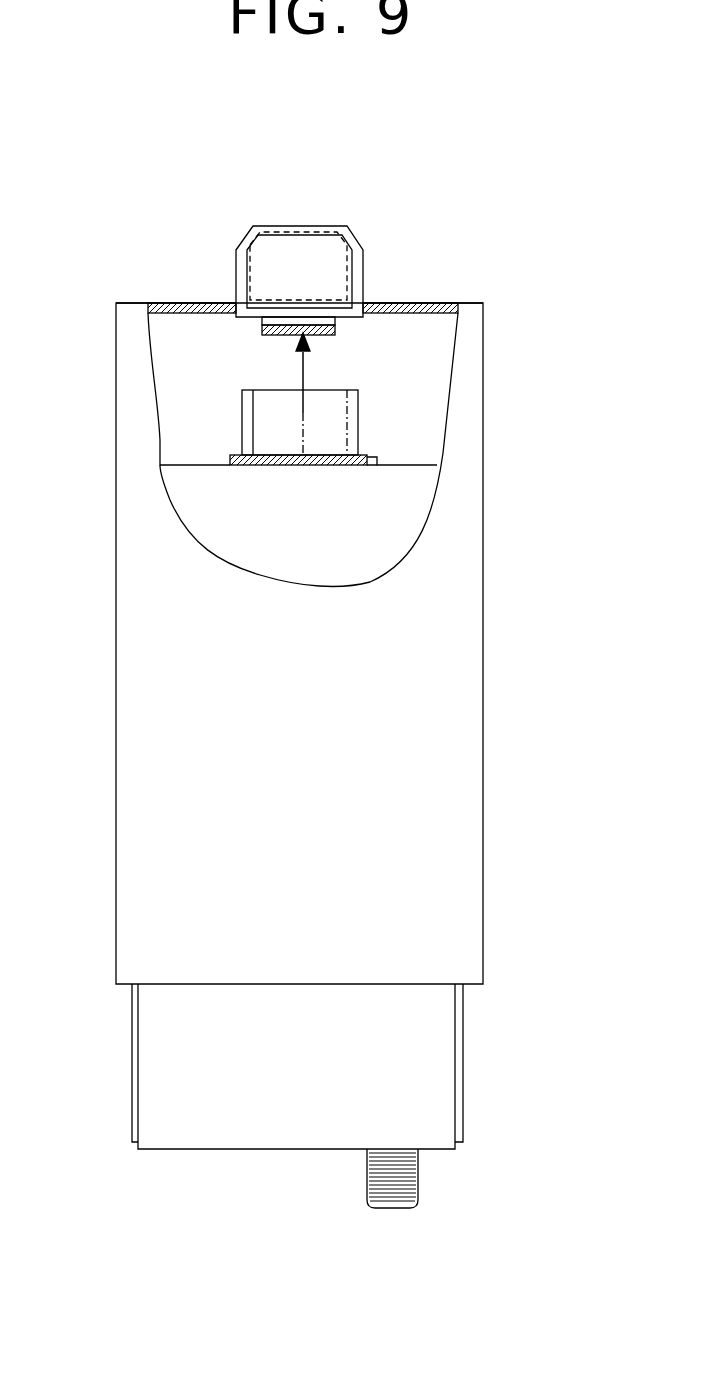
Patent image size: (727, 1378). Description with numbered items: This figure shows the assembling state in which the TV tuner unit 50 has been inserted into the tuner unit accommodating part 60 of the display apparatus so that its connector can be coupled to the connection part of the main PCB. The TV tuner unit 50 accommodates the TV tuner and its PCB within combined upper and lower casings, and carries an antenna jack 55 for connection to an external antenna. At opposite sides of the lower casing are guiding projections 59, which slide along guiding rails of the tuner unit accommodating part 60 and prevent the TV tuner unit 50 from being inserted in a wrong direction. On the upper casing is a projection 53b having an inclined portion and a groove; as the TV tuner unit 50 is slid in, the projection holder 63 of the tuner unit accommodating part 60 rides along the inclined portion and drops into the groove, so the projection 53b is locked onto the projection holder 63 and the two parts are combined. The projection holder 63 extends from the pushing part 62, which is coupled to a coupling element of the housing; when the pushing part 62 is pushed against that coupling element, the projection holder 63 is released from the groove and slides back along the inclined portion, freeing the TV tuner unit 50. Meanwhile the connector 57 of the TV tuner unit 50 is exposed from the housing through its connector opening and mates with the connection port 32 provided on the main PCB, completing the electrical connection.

The connection port 32 is at (268, 230).
The pushing part 62 is at (352, 268).
The projection holder 63 is at (335, 330).
The connector 57 is at (332, 423).
The projection 53b is at (377, 455).
The tuner unit accommodating part 60 is at (450, 723).
The TV tuner unit 50 is at (267, 1133).
The guiding projections 59 is at (133, 1110).
The antenna jack 55 is at (390, 1197).